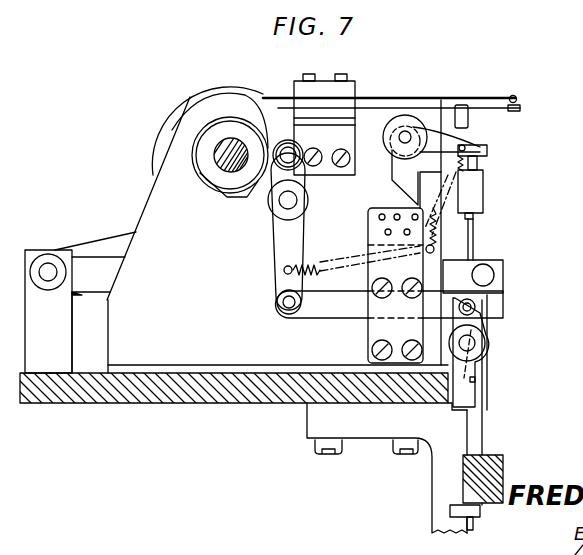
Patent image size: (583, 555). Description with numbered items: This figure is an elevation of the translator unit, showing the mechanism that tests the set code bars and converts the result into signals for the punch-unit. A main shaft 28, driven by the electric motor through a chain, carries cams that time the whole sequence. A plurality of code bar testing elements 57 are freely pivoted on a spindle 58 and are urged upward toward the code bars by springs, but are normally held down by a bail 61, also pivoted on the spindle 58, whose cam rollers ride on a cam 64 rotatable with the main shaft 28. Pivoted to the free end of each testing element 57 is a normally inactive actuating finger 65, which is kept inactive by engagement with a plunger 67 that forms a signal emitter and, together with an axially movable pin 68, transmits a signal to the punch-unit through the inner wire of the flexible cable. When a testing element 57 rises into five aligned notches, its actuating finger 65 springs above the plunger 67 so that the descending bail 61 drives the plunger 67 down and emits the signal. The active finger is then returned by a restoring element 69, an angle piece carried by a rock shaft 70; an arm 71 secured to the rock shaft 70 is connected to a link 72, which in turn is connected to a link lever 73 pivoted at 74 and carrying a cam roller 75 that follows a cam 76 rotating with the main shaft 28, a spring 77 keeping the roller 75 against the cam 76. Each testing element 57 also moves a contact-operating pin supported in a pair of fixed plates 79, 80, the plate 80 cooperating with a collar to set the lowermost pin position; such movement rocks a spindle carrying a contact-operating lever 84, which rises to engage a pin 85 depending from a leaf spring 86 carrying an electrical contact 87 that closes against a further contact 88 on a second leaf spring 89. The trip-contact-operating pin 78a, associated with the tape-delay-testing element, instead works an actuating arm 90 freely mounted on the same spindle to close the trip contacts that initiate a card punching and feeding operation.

The main shaft 28 is at (215, 162).
The code bar testing element 57 is at (87, 268).
The spindle 58 is at (48, 270).
The bail 61 is at (116, 243).
The cam 64 is at (173, 117).
The actuating finger 65 is at (484, 395).
The plunger 67 is at (477, 435).
The axially movable pin 68 is at (478, 523).
The restoring element 69 is at (478, 378).
The rock shaft 70 is at (468, 343).
The arm 71 is at (480, 313).
The link 72 is at (345, 310).
The link lever 73 is at (278, 244).
The pivot 74 is at (277, 210).
The cam roller 75 is at (290, 140).
The cam 76 is at (222, 197).
The spring 77 is at (313, 263).
The trip-contact-operating pin 78a is at (473, 243).
The fixed plate 79 is at (484, 172).
The fixed plate 80 is at (474, 218).
The contact-operating lever 84 is at (473, 145).
The pin 85 is at (460, 118).
The leaf spring 86 is at (493, 110).
The electrical contact 87 is at (524, 108).
The contact 88 is at (520, 98).
The second leaf spring 89 is at (482, 98).
The actuating arm 90 is at (488, 152).